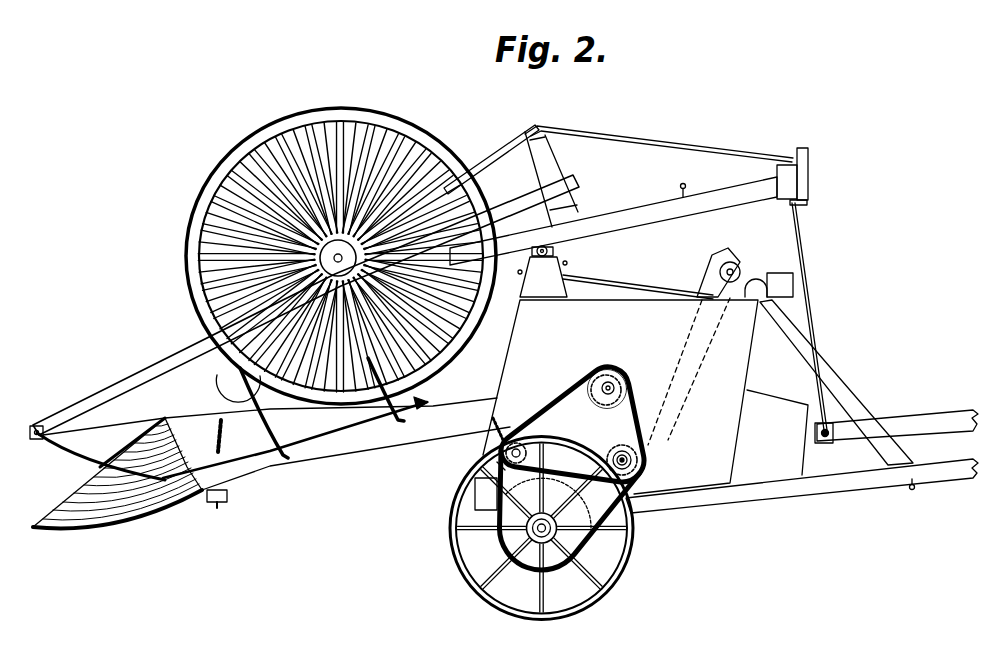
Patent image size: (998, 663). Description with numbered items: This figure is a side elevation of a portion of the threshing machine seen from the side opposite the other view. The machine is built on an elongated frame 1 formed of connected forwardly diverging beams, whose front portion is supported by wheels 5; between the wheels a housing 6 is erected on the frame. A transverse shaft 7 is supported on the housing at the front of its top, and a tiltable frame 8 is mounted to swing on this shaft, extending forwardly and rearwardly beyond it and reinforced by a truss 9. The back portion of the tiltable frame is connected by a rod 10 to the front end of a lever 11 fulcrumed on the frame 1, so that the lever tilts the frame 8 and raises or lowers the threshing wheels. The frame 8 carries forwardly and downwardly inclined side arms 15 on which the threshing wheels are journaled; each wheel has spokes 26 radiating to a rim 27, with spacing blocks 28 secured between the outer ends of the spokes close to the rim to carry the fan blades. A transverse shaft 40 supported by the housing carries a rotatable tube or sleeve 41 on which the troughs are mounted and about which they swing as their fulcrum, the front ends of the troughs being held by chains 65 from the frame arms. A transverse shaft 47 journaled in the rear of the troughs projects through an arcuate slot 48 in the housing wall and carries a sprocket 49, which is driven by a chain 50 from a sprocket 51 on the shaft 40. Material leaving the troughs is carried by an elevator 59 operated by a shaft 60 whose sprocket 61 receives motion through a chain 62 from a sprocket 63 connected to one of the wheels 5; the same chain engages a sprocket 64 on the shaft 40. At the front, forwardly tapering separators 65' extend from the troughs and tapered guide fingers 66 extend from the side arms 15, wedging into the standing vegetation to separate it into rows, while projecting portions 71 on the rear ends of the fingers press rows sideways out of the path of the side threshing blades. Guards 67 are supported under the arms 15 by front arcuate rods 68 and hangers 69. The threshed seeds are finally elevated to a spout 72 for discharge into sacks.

The elongated frame 1 is at (806, 489).
The wheels 5 is at (620, 571).
The housing 6 is at (645, 397).
The transverse shaft 7 is at (550, 252).
The tiltable frame 8 is at (638, 220).
The truss 9 is at (672, 150).
The rod 10 is at (820, 310).
The lever 11 is at (925, 426).
The side arms 15 is at (125, 390).
The spokes 26 is at (336, 130).
The rim 27 is at (198, 278).
The spacing blocks 28 is at (224, 221).
The transverse shaft 40 is at (538, 458).
The tube or sleeve 41 is at (486, 472).
The transverse shaft 47 is at (606, 380).
The arcuate slot 48 is at (592, 384).
The sprocket 49 is at (614, 382).
The chain 50 is at (636, 427).
The sprocket 51 is at (516, 436).
The elevator 59 is at (709, 275).
The shaft 60 is at (645, 458).
The sprocket 61 is at (652, 468).
The chain 62 is at (612, 518).
The sprocket 63 is at (505, 540).
The sprocket 64 is at (498, 466).
The chains 65 is at (237, 436).
The forwardly tapering separators 65' is at (117, 473).
The tapered guide fingers 66 is at (128, 416).
The guards 67 is at (270, 462).
The front arcuate rods 68 is at (52, 447).
The hangers 69 is at (400, 422).
The projecting portions 71 is at (283, 396).
The spout 72 is at (793, 284).